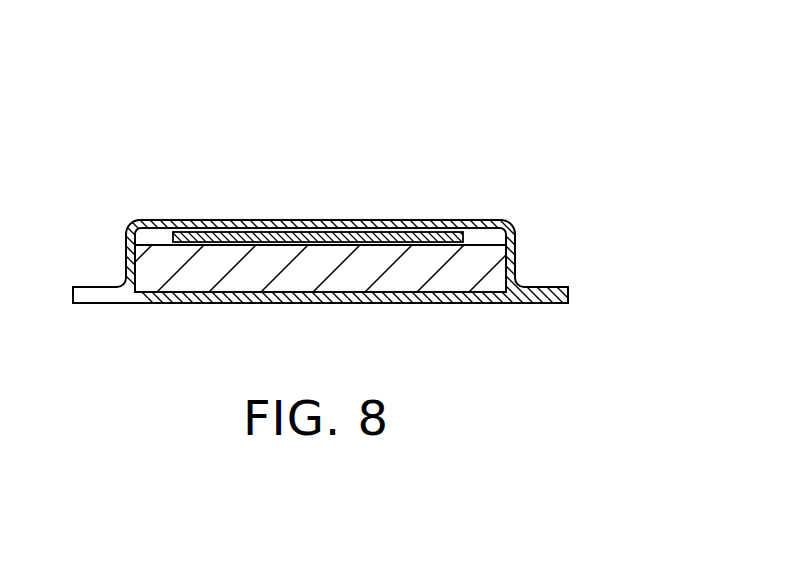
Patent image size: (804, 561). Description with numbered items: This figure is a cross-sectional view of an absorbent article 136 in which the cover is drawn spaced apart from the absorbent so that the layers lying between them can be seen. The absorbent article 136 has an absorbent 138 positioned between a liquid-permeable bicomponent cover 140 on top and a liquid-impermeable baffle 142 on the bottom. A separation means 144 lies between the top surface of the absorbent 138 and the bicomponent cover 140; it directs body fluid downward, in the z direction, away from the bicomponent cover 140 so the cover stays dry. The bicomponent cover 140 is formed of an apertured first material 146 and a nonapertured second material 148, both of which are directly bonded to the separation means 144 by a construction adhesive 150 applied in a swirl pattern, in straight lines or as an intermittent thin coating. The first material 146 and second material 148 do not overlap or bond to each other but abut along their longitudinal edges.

The absorbent article 136 is at (527, 102).
The absorbent 138 is at (495, 263).
The bicomponent cover 140 is at (153, 220).
The liquid-impermeable baffle 142 is at (497, 303).
The separation means 144 is at (465, 233).
The apertured first material 146 is at (327, 223).
The nonapertured second material 148 is at (508, 222).
The construction adhesive 150 is at (222, 221).